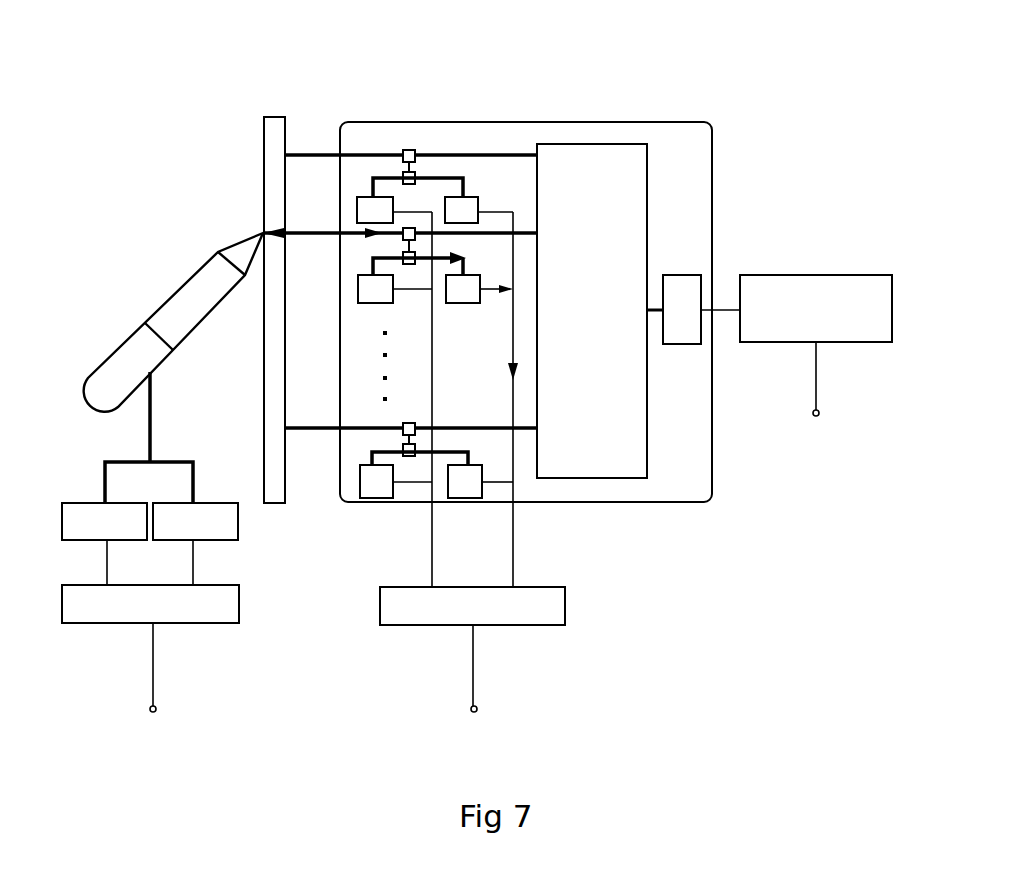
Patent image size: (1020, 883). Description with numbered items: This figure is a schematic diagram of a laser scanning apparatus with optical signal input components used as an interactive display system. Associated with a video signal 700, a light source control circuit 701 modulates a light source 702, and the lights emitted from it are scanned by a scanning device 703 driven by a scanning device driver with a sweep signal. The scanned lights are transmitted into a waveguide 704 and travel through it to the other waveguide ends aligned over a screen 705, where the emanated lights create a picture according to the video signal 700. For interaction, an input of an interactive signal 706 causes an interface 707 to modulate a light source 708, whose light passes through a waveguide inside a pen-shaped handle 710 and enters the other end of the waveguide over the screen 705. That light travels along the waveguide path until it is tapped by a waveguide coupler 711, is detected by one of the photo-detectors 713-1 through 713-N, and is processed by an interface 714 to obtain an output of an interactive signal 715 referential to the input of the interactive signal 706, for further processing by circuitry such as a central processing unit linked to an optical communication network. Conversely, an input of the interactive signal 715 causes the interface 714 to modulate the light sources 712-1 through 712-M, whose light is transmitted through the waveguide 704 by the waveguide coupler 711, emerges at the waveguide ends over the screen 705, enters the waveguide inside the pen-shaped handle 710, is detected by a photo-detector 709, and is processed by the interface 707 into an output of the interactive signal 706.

The video signal 700 is at (818, 395).
The light source control circuit 701 is at (862, 330).
The light source 702 is at (693, 285).
The scanning device 703 is at (609, 157).
The waveguide 704 is at (316, 148).
The screen 705 is at (272, 140).
The interactive signal 706 is at (153, 684).
The interface 707 is at (216, 612).
The light source 708 is at (73, 518).
The photo-detector 709 is at (228, 514).
The pen-shaped handle 710 is at (178, 308).
The waveguide coupler 711 is at (398, 173).
The light source 712-1 is at (388, 202).
The photo-detector 713-1 is at (465, 202).
The light source 712-M is at (375, 482).
The photo-detector 713-N is at (465, 482).
The interface 714 is at (398, 612).
The interactive signal 715 is at (476, 684).